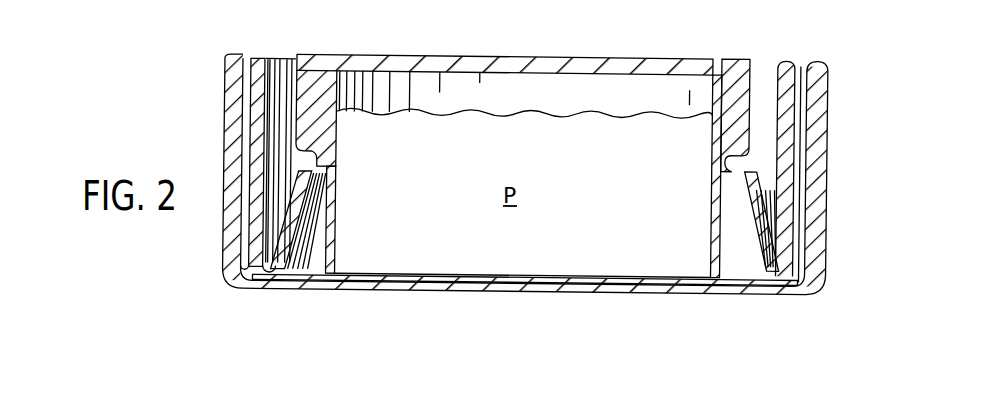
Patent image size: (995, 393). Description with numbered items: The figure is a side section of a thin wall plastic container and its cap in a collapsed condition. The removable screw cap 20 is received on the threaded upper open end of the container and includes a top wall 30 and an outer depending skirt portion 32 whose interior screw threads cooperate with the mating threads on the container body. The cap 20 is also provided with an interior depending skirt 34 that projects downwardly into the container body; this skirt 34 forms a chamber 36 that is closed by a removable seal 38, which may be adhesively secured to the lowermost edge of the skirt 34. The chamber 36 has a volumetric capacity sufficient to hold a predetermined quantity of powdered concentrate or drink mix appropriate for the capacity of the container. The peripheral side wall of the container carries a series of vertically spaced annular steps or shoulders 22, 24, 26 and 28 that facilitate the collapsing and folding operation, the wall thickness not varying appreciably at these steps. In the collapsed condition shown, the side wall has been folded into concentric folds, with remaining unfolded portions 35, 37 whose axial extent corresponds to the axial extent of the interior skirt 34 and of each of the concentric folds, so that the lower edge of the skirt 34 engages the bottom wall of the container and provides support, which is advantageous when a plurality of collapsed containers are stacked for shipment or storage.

The screw cap 20 is at (740, 44).
The annular step 22 is at (277, 283).
The annular step 24 is at (261, 54).
The annular step 26 is at (232, 282).
The annular step 28 is at (234, 54).
The top wall 30 is at (380, 54).
The outer depending skirt portion 32 is at (741, 88).
The interior depending skirt 34 is at (726, 257).
The remaining unfolded portion 35 is at (760, 195).
The chamber 36 is at (440, 257).
The remaining unfolded portion 37 is at (823, 200).
The removable seal 38 is at (572, 293).